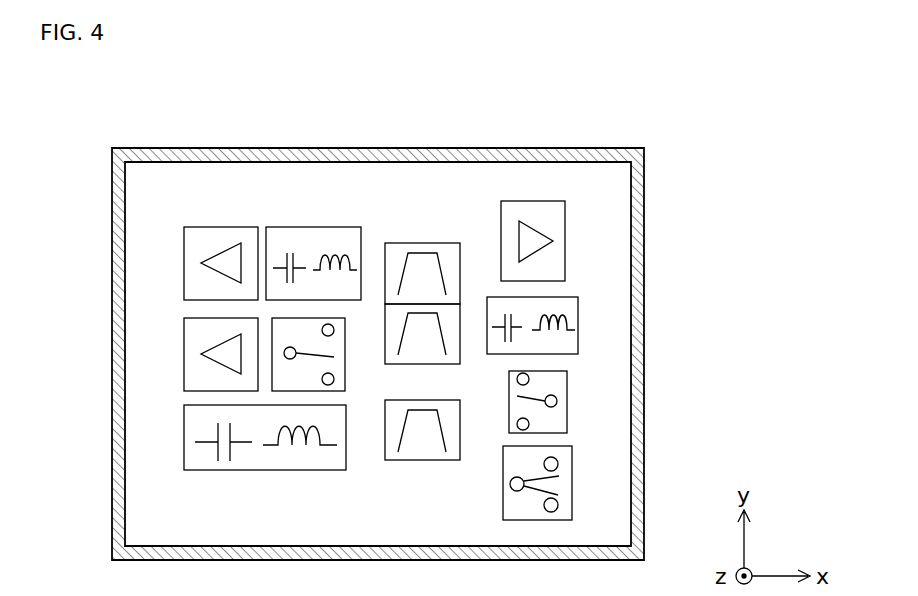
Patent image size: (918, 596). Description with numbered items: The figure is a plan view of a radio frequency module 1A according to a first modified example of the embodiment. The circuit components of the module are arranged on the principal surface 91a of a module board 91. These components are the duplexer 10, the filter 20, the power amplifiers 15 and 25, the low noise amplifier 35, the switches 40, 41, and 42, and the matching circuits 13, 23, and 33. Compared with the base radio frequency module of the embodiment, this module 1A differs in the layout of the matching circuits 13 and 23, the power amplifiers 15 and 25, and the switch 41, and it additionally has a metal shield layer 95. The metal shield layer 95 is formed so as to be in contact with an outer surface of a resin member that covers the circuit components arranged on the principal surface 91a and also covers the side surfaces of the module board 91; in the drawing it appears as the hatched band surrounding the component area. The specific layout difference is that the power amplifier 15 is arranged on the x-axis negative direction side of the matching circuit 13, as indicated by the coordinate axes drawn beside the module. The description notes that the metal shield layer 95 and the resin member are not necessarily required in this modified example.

The radio frequency module 1A is at (733, 156).
The module board 91 is at (627, 213).
The principal surface 91a is at (583, 173).
The metal shield layer 95 is at (401, 157).
The duplexer 10 is at (404, 243).
The matching circuit 13 is at (298, 231).
The power amplifier 15 is at (184, 271).
The filter 20 is at (404, 400).
The matching circuit 23 is at (296, 470).
The power amplifier 25 is at (184, 362).
The matching circuit 33 is at (578, 328).
The low noise amplifier 35 is at (565, 251).
The switch 40 is at (572, 478).
The switch 41 is at (345, 368).
The switch 42 is at (567, 405).